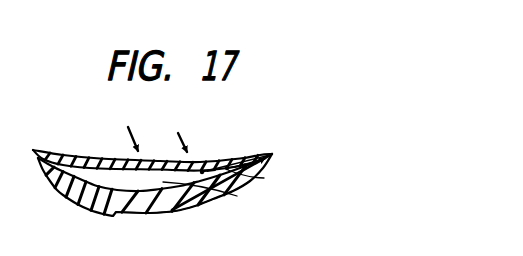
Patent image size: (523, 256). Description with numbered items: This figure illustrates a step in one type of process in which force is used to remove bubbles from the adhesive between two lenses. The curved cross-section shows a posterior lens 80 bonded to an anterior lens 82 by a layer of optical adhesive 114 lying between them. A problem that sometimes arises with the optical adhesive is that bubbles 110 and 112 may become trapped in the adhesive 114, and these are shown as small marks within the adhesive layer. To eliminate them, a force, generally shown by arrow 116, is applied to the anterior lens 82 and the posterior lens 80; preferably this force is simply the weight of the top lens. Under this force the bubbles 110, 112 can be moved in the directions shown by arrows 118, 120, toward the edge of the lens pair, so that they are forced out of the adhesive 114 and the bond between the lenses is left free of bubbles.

The posterior lens 80 is at (74, 149).
The anterior lens 82 is at (83, 205).
The bubble 110 is at (202, 170).
The bubble 112 is at (228, 166).
The adhesive 114 is at (190, 207).
The arrow 116 is at (128, 132).
The arrow 118 is at (237, 199).
The arrow 120 is at (264, 178).